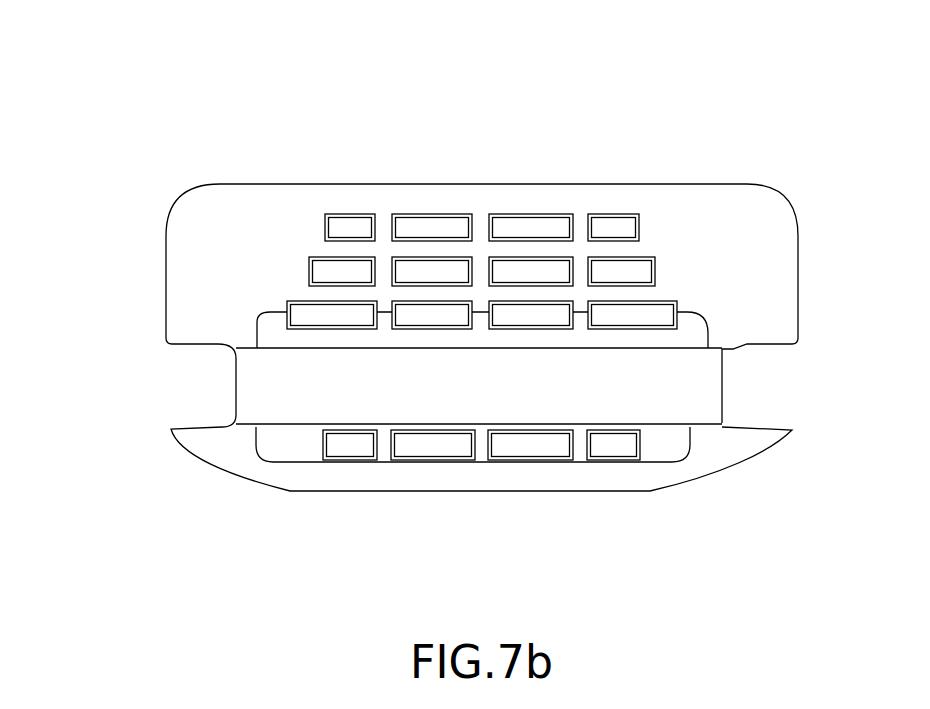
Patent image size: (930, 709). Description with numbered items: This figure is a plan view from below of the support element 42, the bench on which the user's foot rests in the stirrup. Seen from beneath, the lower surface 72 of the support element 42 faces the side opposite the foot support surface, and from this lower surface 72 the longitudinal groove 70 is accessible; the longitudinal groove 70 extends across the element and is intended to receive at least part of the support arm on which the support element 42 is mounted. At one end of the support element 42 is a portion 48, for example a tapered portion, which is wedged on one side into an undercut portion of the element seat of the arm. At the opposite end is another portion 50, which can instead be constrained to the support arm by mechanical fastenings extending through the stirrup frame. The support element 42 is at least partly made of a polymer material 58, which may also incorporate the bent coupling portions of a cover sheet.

The support element 42 is at (481, 328).
The polymer material 58 is at (742, 247).
The lower surface 72 is at (667, 223).
The longitudinal groove 70 is at (455, 422).
The portion 50 is at (343, 505).
The tapered portion 48 is at (700, 393).